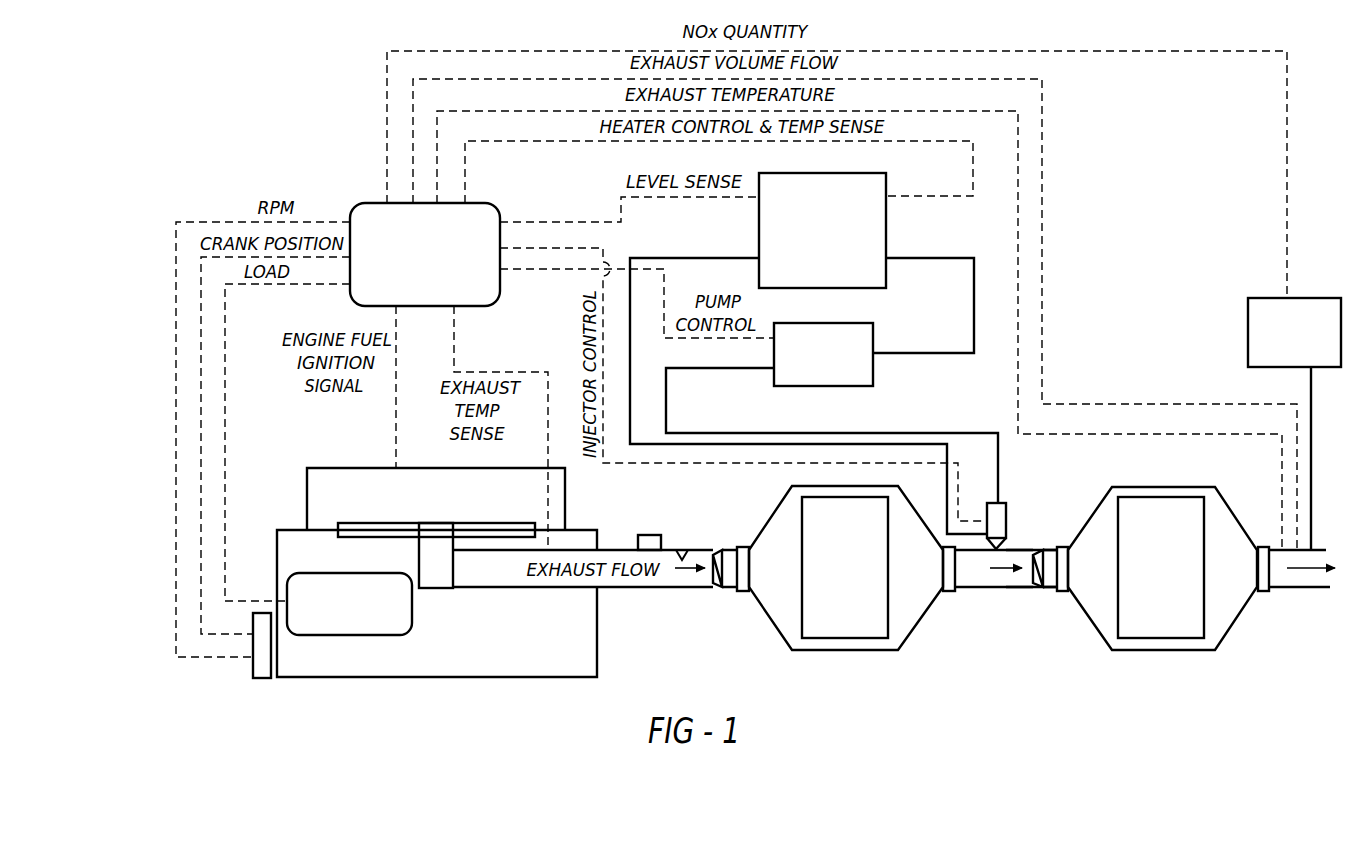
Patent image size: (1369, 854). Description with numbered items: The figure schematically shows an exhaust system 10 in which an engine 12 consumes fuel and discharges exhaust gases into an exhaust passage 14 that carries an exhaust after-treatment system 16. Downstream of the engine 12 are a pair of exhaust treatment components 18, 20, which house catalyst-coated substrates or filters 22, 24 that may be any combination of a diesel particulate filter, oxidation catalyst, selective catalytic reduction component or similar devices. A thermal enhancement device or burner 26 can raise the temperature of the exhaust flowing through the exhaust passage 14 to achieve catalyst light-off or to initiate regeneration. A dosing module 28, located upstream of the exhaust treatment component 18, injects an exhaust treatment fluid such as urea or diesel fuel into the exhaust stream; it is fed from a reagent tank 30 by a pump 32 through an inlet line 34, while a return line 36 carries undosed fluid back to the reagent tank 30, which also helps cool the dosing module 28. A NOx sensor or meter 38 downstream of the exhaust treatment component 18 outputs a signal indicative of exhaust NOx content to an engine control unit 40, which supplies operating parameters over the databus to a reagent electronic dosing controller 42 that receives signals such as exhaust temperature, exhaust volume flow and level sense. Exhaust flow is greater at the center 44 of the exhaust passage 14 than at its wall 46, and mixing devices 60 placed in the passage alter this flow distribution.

The exhaust system 10 is at (262, 108).
The engine 12 is at (398, 677).
The exhaust passage 14 is at (615, 590).
The exhaust after-treatment system 16 is at (1030, 622).
The exhaust treatment component 18 is at (878, 655).
The exhaust treatment component 20 is at (1210, 672).
The catalyst-coated substrate or filter 22 is at (832, 578).
The catalyst-coated substrate or filter 24 is at (1147, 578).
The thermal enhancement device or burner 26 is at (648, 535).
The dosing module 28 is at (1008, 520).
The reagent tank 30 is at (888, 235).
The pump 32 is at (855, 386).
The inlet line 34 is at (666, 390).
The return line 36 is at (736, 258).
The NOx sensor or meter 38 is at (1248, 322).
The engine control unit 40 is at (355, 635).
The reagent electronic dosing controller 42 is at (480, 203).
The center of the exhaust passage 44 is at (667, 572).
The wall of the exhaust passage 46 is at (684, 550).
The mixing device 60 is at (716, 590).